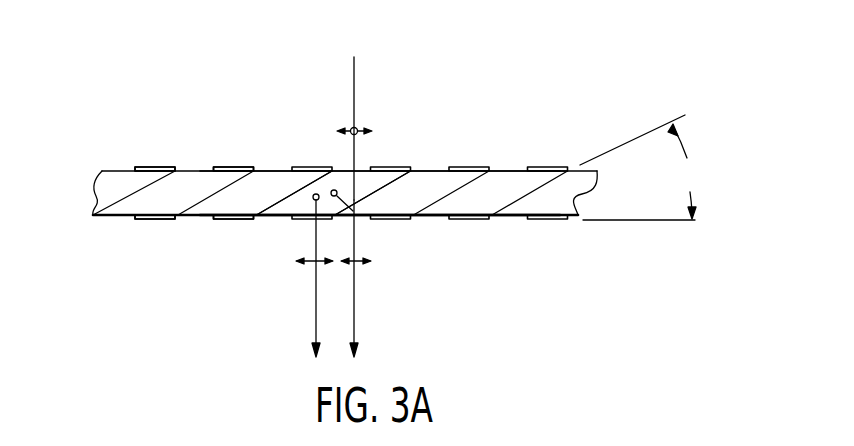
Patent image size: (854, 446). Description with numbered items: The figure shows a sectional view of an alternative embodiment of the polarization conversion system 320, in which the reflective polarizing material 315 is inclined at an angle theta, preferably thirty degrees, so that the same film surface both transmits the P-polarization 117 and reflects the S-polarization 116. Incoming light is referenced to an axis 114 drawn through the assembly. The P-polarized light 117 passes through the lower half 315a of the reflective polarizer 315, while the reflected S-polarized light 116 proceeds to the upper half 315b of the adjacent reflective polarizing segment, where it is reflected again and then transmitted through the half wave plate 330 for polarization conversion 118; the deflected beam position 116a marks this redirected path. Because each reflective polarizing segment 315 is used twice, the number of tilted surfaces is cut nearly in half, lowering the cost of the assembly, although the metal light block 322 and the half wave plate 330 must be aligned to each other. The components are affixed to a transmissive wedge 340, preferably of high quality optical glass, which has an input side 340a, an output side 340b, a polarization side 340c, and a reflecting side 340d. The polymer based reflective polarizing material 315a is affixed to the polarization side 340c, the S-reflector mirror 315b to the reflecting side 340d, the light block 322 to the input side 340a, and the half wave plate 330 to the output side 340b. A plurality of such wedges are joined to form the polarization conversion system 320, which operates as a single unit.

The polarization conversion system 320 is at (607, 104).
The metal light block 322 is at (473, 167).
The half wave plate 330 is at (548, 218).
The transmissive wedge 340 is at (432, 172).
The input side 340a is at (197, 171).
The output side 340b is at (115, 217).
The polarization side 340c is at (197, 217).
The reflecting side 340d is at (133, 189).
The reflective polarizing material 315 is at (385, 180).
The lower half of the reflective polarizer 315a is at (355, 203).
The upper half of the reflective polarizing segment 315b is at (313, 196).
The S-polarization 116 is at (336, 192).
The deflected beam position 116a is at (313, 197).
The optical axis 114 is at (354, 75).
The P-polarization 117 is at (354, 318).
The polarization conversion 118 is at (315, 318).